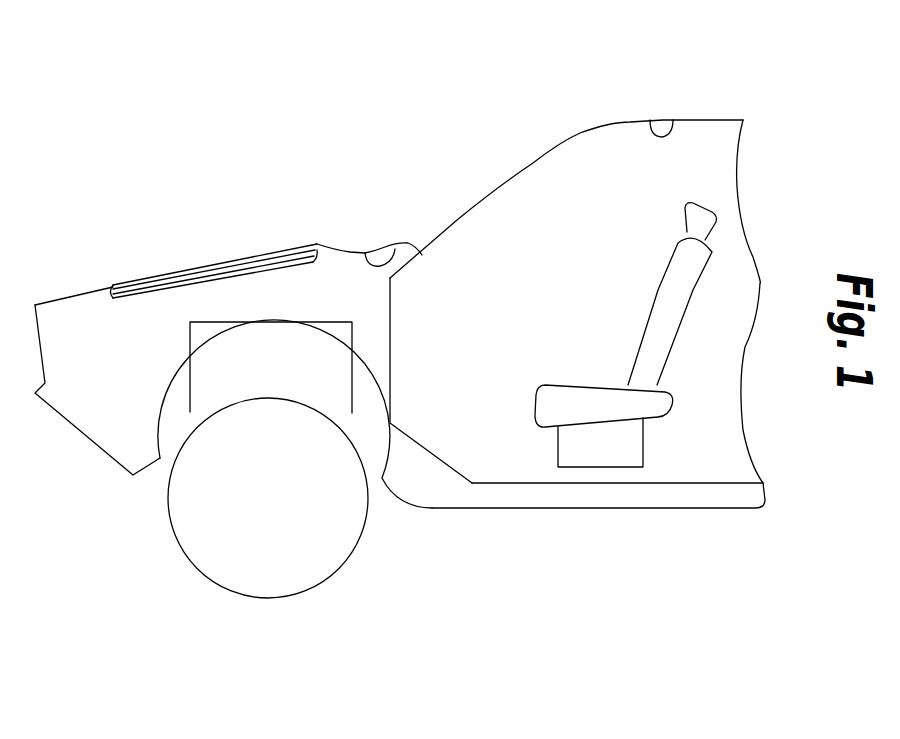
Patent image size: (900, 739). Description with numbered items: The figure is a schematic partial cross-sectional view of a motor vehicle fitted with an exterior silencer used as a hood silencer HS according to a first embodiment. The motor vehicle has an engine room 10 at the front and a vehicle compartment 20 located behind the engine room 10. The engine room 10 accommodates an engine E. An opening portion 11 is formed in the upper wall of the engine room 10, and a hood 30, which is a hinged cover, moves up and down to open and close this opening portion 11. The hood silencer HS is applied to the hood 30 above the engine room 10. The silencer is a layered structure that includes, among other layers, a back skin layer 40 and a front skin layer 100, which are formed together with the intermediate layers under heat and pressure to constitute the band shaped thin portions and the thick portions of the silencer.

The engine room 10 is at (391, 248).
The opening portion 11 is at (315, 245).
The vehicle compartment 20 is at (670, 130).
The hood 30 is at (248, 257).
The back skin layer 40 is at (147, 279).
The front skin layer 100 is at (277, 265).
The engine E is at (205, 372).
The hood silencer HS is at (138, 303).